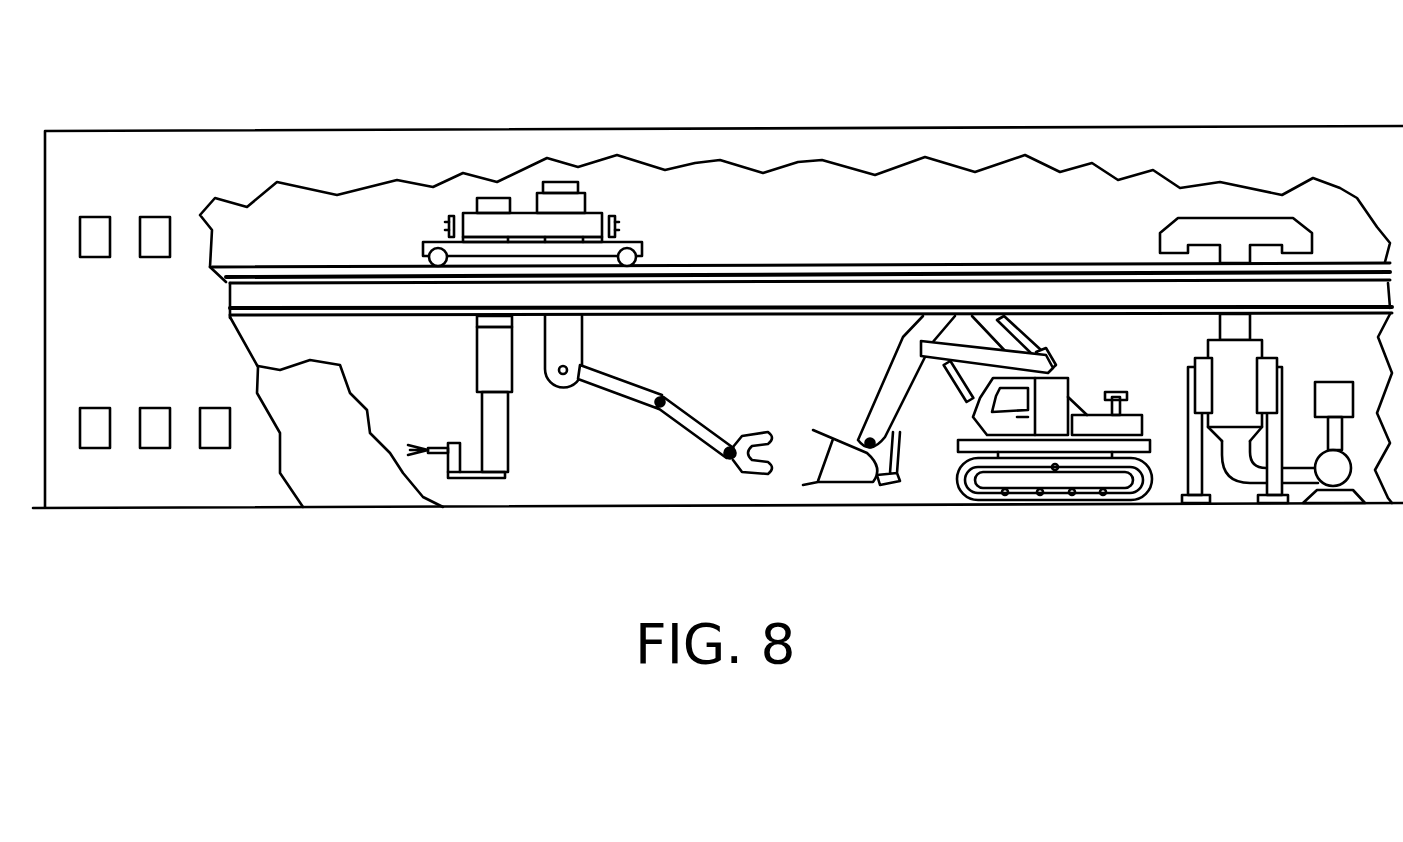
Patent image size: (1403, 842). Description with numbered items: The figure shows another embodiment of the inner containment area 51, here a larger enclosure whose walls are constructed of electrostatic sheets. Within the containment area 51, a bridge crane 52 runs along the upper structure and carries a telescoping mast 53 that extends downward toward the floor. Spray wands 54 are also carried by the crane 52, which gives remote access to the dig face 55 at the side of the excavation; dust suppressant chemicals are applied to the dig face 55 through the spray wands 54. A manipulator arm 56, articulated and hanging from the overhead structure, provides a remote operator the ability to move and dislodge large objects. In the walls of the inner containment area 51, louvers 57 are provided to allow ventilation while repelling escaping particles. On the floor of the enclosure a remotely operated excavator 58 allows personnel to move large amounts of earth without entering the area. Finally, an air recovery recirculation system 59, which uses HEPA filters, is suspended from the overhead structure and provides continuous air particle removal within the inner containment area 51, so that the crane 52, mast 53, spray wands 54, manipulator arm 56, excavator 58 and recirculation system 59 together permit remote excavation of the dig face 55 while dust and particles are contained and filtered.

The inner containment area 51 is at (423, 130).
The bridge crane 52 is at (627, 237).
The telescoping mast 53 is at (512, 425).
The spray wands 54 is at (440, 447).
The dig face 55 is at (377, 435).
The manipulator arm 56 is at (702, 415).
The louvers 57 is at (155, 217).
The remotely operated excavator 58 is at (972, 350).
The air recovery recirculation system 59 is at (1202, 348).